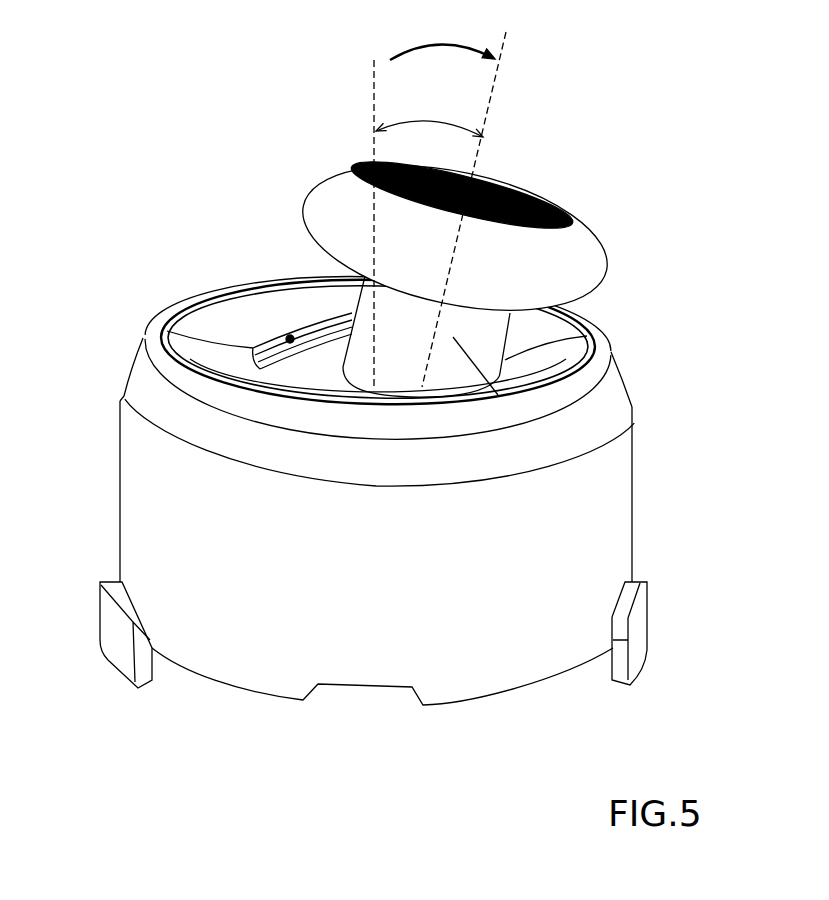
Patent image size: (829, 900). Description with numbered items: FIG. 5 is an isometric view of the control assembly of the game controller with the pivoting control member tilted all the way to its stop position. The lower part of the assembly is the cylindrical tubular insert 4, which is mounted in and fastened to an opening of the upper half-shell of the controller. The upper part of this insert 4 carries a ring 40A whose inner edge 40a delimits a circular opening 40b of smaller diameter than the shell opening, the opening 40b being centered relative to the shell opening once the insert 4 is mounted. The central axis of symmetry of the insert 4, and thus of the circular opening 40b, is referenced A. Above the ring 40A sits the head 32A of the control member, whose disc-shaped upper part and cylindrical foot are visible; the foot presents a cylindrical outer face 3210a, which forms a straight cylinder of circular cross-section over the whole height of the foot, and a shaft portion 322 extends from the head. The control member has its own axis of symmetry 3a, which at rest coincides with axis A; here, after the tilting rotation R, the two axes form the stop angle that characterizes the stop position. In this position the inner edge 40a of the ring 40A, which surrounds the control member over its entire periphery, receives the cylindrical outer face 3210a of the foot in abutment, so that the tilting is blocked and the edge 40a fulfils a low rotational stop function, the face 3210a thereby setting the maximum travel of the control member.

The cylindrical tubular insert 4 is at (600, 535).
The cylindrical outer face 3210a is at (505, 410).
The ring 40A is at (563, 357).
The circular opening 40b is at (296, 342).
The inner edge 40a is at (258, 343).
The shaft portion of operating member 322 is at (322, 300).
The head 32A is at (618, 197).
The axis of symmetry 3a is at (494, 96).
The central axis of symmetry A is at (373, 108).
The rotation R is at (442, 30).